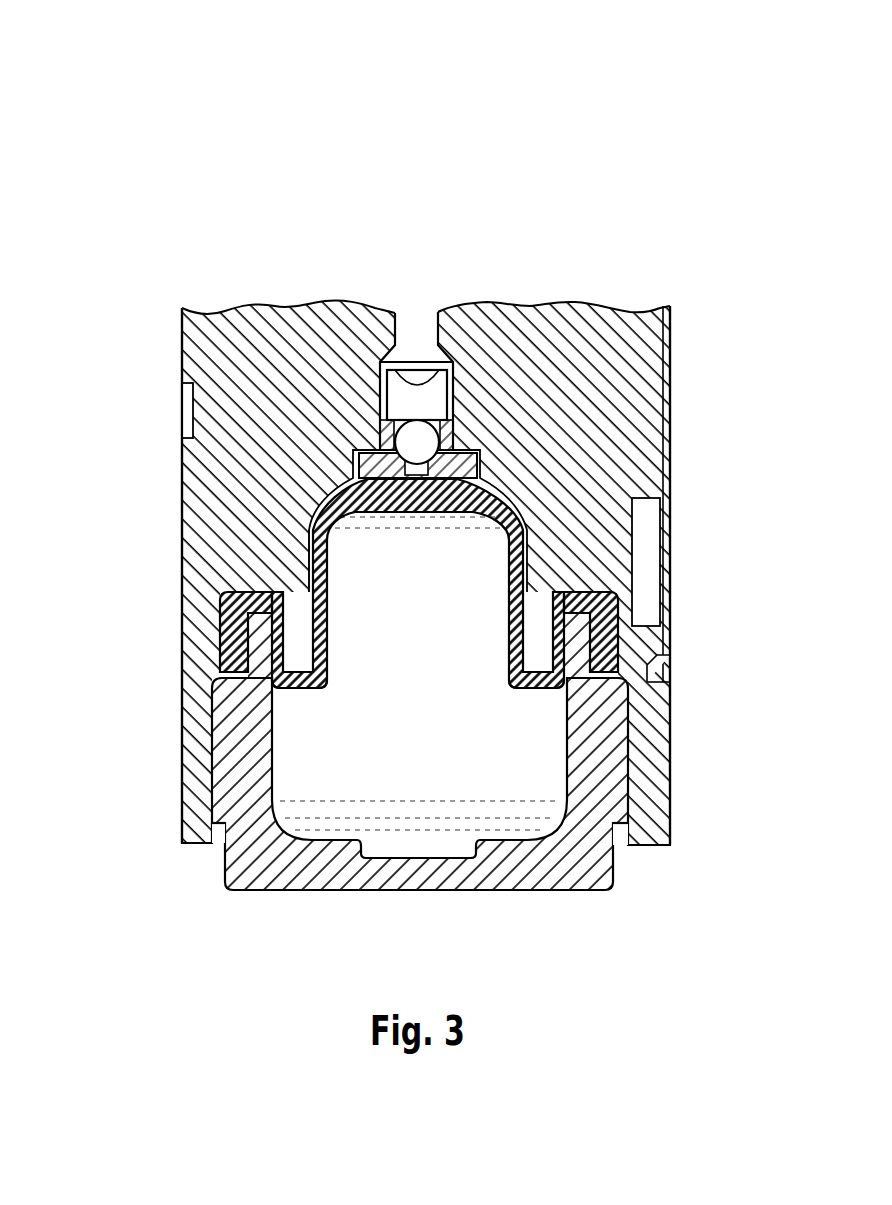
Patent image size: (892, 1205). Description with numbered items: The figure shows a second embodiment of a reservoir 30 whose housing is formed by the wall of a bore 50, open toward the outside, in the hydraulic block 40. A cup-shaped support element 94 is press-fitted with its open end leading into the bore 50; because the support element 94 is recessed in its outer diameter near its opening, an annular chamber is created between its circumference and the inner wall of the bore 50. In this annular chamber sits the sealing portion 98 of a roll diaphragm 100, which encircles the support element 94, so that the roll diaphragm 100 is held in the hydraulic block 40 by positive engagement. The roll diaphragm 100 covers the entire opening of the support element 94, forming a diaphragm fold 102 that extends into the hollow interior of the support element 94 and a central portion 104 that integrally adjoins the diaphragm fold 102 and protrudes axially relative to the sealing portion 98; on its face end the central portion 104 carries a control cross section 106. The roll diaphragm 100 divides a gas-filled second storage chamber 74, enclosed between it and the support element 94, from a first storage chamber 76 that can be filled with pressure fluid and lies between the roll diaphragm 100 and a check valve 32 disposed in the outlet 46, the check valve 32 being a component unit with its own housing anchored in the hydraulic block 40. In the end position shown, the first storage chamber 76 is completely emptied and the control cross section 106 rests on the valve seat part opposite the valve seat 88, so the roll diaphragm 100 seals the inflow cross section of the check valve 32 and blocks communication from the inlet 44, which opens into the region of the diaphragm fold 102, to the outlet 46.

The reservoir 30 is at (296, 163).
The check valve 32 is at (340, 402).
The hydraulic block 40 is at (222, 365).
The inlet 44 is at (535, 637).
The outlet 46 is at (396, 324).
The bore 50 is at (628, 745).
The second storage chamber 74 is at (317, 753).
The first storage chamber 76 is at (357, 488).
The valve seat 88 is at (420, 433).
The support element 94 is at (308, 872).
The sealing portion 98 is at (224, 648).
The roll diaphragm 100 is at (296, 552).
The diaphragm fold 102 is at (298, 710).
The central portion 104 is at (505, 616).
The control cross section 106 is at (467, 492).